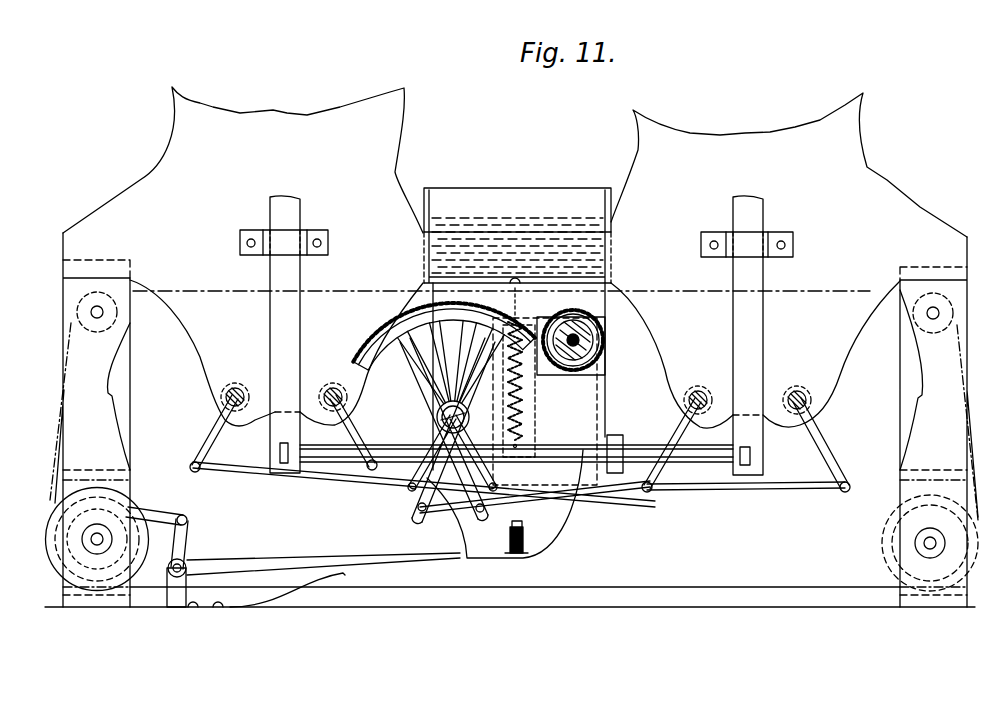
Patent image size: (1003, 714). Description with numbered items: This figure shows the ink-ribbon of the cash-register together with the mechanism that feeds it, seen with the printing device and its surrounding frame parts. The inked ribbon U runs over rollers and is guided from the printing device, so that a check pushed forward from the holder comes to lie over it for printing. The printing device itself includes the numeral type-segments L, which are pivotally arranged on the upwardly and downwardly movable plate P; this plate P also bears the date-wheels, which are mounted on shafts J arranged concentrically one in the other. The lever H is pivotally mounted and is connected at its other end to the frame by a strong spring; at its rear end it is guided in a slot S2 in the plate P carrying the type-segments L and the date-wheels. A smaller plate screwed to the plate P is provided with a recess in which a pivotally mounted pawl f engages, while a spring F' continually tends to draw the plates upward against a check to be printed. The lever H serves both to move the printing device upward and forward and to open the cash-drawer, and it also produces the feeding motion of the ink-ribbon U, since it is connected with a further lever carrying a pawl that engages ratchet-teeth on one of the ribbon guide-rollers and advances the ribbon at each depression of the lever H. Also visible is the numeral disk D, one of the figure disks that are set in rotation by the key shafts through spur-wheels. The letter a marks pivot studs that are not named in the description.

The pivot studs a is at (230, 385).
The inked ribbon U is at (366, 290).
The numeral type-segments L is at (444, 353).
The shafts J is at (600, 343).
The spring F' is at (540, 389).
The plate P is at (562, 418).
The numeral disk D is at (587, 448).
The pawl f is at (520, 485).
The slot S2 is at (510, 533).
The lever H is at (525, 539).